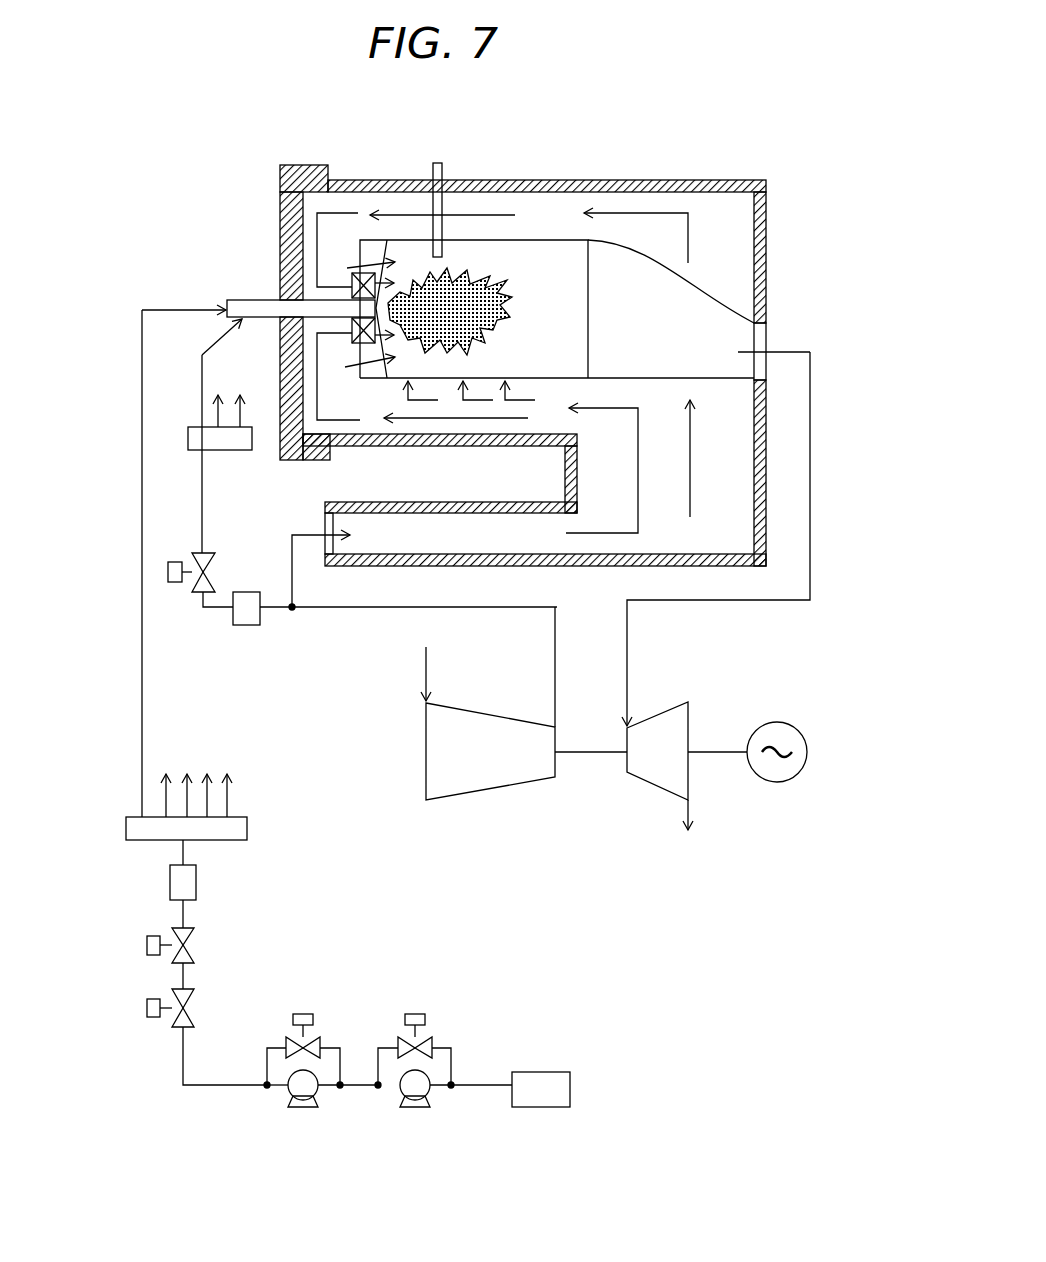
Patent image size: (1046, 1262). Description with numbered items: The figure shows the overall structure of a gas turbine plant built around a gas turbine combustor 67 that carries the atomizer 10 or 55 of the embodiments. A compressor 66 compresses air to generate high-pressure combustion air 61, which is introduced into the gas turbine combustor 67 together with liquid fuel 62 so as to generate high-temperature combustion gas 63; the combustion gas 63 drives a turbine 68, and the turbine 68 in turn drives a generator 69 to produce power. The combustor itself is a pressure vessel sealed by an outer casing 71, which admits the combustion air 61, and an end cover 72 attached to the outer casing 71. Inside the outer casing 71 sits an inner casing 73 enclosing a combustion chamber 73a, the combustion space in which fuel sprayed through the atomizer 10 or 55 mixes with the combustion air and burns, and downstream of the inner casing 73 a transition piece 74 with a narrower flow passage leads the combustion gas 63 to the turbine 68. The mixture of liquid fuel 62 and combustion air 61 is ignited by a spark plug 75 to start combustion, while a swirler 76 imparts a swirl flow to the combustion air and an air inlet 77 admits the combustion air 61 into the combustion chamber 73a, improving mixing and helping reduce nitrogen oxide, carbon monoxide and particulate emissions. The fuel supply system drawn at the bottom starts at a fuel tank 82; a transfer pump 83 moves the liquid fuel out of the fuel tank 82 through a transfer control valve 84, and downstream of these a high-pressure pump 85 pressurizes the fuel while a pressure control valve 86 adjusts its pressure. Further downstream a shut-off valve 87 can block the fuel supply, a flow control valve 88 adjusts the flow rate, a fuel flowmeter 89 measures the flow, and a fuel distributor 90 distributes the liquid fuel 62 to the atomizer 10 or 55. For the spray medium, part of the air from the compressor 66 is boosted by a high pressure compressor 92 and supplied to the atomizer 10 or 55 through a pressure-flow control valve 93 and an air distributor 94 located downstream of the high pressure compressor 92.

The atomizer 10 is at (257, 281).
The atomizer 55 is at (238, 298).
The combustion air 61 is at (300, 535).
The liquid fuel 62 is at (142, 528).
The combustion gas 63 is at (812, 548).
The compressor 66 is at (480, 790).
The gas turbine combustor 67 is at (712, 176).
The turbine 68 is at (650, 787).
The generator 69 is at (775, 782).
The outer casing 71 is at (512, 180).
The end cover 72 is at (275, 200).
The inner casing 73 is at (530, 240).
The combustion chamber 73a is at (570, 346).
The transition piece 74 is at (697, 288).
The spark plug 75 is at (433, 163).
The swirler 76 is at (352, 280).
The air inlet 77 is at (373, 252).
The fuel tank 82 is at (540, 1072).
The transfer pump 83 is at (417, 1110).
The transfer control valve 84 is at (415, 1014).
The high-pressure pump 85 is at (305, 1110).
The pressure control valve 86 is at (303, 1014).
The shut-off valve 87 is at (147, 1005).
The flow control valve 88 is at (147, 945).
The fuel flowmeter 89 is at (170, 888).
The fuel distributor 90 is at (127, 830).
The high pressure compressor 92 is at (250, 625).
The pressure-flow control valve 93 is at (212, 553).
The air distributor 94 is at (185, 427).